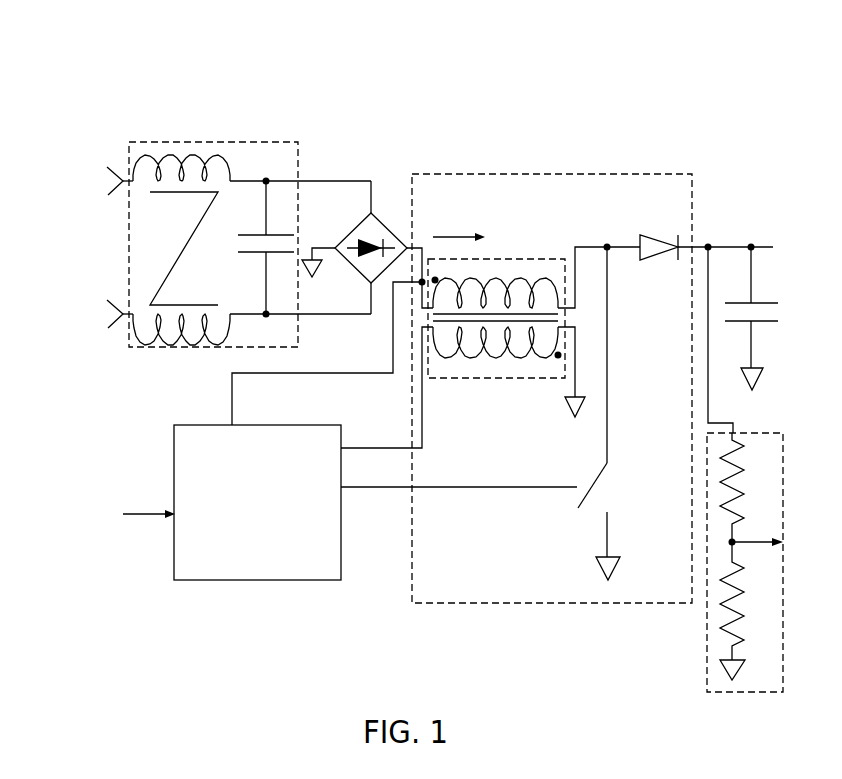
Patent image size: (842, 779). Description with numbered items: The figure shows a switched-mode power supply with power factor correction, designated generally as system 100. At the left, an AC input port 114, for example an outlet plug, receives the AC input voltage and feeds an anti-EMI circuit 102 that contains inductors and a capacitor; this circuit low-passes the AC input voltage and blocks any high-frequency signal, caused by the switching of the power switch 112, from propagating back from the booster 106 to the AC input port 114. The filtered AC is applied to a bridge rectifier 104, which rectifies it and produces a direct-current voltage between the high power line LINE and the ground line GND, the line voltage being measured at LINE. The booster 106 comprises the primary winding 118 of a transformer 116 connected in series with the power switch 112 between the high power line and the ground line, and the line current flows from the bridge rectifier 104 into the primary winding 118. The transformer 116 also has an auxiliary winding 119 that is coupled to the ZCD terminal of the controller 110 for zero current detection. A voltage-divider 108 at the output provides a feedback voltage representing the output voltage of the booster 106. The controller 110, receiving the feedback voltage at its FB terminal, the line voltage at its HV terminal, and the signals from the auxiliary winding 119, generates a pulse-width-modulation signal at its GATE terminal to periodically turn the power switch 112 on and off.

The power supply / flyback converter system 100 is at (424, 77).
The anti-EMI circuit 102 is at (272, 142).
The bridge rectifier 104 is at (379, 220).
The booster 106 is at (464, 581).
The voltage-divider 108 is at (707, 612).
The controller 110 is at (268, 541).
The power switch 112 is at (613, 490).
The AC input port 114 is at (100, 182).
The transformer 116 is at (552, 378).
The primary winding 118 is at (495, 277).
The auxiliary winding 119 is at (497, 354).